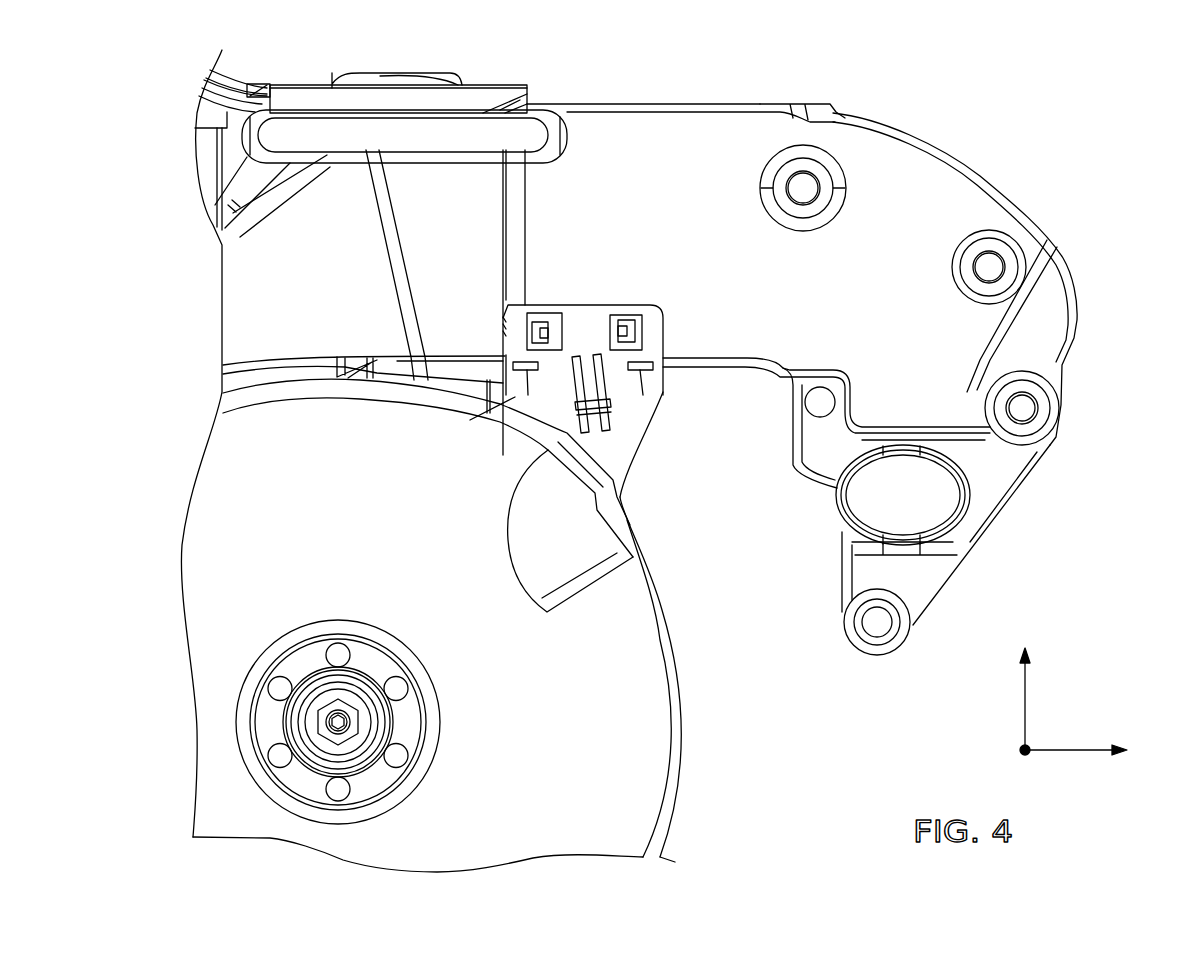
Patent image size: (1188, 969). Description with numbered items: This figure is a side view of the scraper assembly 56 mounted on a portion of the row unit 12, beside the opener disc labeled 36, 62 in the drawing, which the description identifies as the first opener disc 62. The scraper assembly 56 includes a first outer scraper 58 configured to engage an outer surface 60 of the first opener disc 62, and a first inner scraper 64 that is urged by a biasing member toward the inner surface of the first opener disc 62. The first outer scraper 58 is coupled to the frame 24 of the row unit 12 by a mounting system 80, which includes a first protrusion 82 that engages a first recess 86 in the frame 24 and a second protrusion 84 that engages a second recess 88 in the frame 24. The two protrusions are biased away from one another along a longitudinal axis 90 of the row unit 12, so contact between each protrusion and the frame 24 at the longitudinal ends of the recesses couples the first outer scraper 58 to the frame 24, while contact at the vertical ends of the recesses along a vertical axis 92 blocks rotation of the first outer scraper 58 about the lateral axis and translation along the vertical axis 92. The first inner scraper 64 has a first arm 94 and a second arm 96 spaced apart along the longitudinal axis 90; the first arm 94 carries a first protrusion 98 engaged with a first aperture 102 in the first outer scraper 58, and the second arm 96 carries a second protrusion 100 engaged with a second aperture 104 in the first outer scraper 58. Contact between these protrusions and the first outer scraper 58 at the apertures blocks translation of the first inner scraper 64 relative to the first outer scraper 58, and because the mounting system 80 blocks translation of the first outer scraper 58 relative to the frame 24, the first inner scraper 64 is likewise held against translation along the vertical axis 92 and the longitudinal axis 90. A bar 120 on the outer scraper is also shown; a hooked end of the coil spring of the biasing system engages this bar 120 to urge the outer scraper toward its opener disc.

The row unit 12 is at (1074, 122).
The frame 24 is at (878, 145).
The fender rim 36 is at (647, 753).
The scraper assembly 56 is at (572, 295).
The first outer scraper 58 is at (675, 298).
The outer surface 60 is at (630, 660).
The first opener disc 62 is at (697, 688).
The first inner scraper 64 is at (637, 465).
The mounting system 80 is at (538, 288).
The first protrusion 82 is at (537, 328).
The second protrusion 84 is at (645, 330).
The first recess 86 is at (548, 328).
The second recess 88 is at (627, 328).
The longitudinal axis 90 is at (1085, 750).
The vertical axis 92 is at (1026, 693).
The first arm 94 is at (510, 397).
The second arm 96 is at (662, 414).
The first protrusion 98 is at (512, 362).
The second protrusion 100 is at (641, 372).
The first aperture 102 is at (522, 362).
The second aperture 104 is at (647, 367).
The bar 120 is at (603, 396).